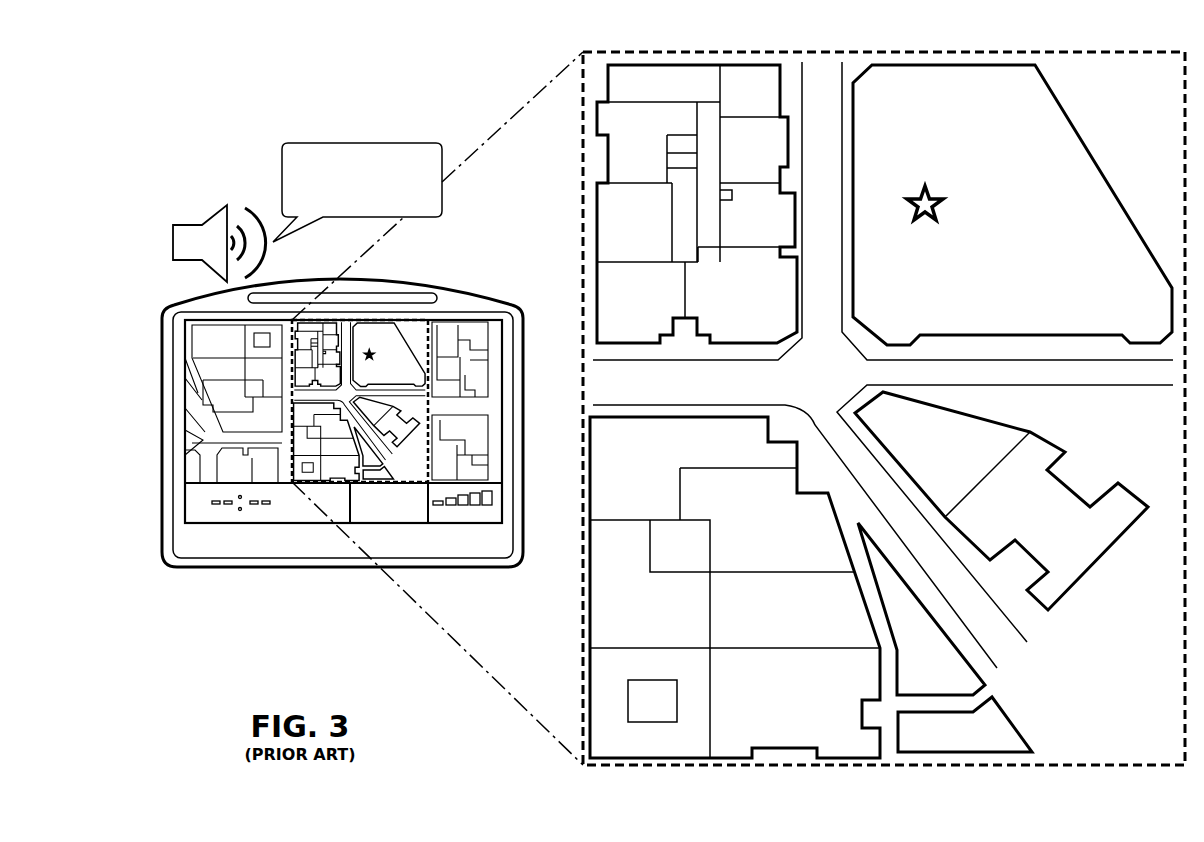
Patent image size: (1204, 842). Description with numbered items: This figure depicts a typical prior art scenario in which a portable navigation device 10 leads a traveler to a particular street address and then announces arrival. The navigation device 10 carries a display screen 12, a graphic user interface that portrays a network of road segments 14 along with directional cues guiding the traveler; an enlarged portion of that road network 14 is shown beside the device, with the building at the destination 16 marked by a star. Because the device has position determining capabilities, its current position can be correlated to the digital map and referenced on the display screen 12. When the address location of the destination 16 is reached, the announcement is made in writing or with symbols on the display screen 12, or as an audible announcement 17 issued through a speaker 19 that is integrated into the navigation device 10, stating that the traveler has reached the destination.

The navigation device 10 is at (186, 568).
The display screen 12 is at (192, 345).
The network of road segments 14 is at (822, 78).
The destination 16 is at (1098, 160).
The audible announcement 17 is at (417, 146).
The speaker 19 is at (188, 232).